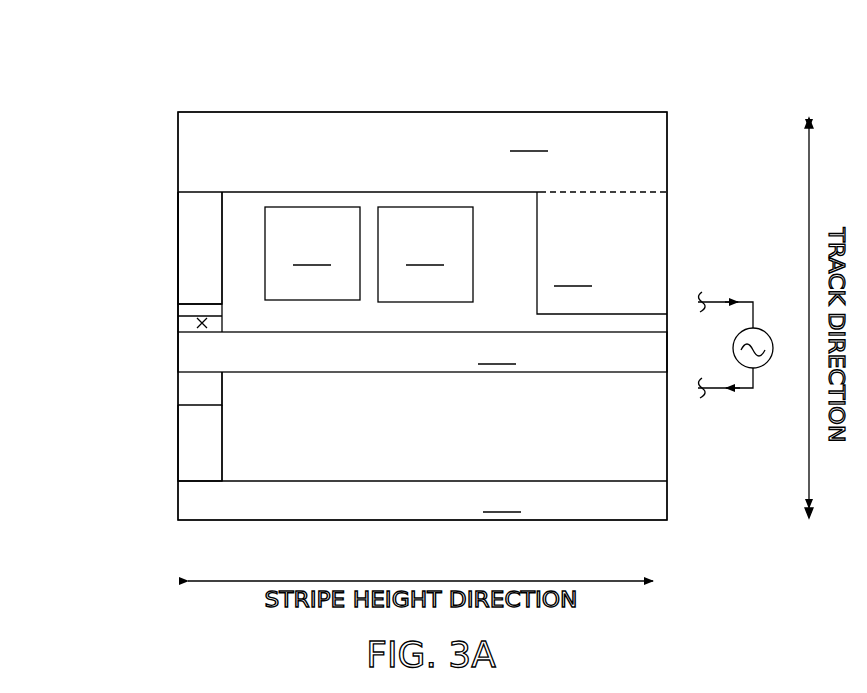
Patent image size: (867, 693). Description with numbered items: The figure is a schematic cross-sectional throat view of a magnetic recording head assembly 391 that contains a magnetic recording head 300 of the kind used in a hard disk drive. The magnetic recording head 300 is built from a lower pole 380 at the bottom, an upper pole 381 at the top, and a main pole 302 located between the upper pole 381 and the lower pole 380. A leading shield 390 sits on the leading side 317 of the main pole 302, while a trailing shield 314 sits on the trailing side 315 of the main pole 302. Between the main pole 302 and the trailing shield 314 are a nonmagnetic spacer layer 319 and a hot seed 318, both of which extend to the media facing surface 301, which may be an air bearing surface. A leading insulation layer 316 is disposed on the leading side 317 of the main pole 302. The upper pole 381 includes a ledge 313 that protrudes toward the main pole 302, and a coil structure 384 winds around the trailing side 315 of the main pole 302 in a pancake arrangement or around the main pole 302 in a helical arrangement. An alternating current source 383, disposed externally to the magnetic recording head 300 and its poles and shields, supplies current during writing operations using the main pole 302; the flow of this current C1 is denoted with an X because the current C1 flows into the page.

The magnetic recording head assembly 391 is at (123, 72).
The magnetic recording head 300 is at (162, 152).
The upper pole 381 is at (422, 159).
The trailing shield 314 is at (195, 229).
The media facing surface 301 is at (178, 258).
The hot seed 318 is at (185, 308).
The nonmagnetic spacer layer 319 is at (185, 325).
The current C1 is at (203, 326).
The trailing side 315 is at (245, 330).
The coil structure 384 is at (369, 254).
The ledge 313 is at (602, 253).
The main pole 302 is at (422, 352).
The leading insulation layer 316 is at (198, 388).
The leading side 317 is at (244, 382).
The leading shield 390 is at (195, 452).
The lower pole 380 is at (422, 496).
The alternating current source 383 is at (765, 372).